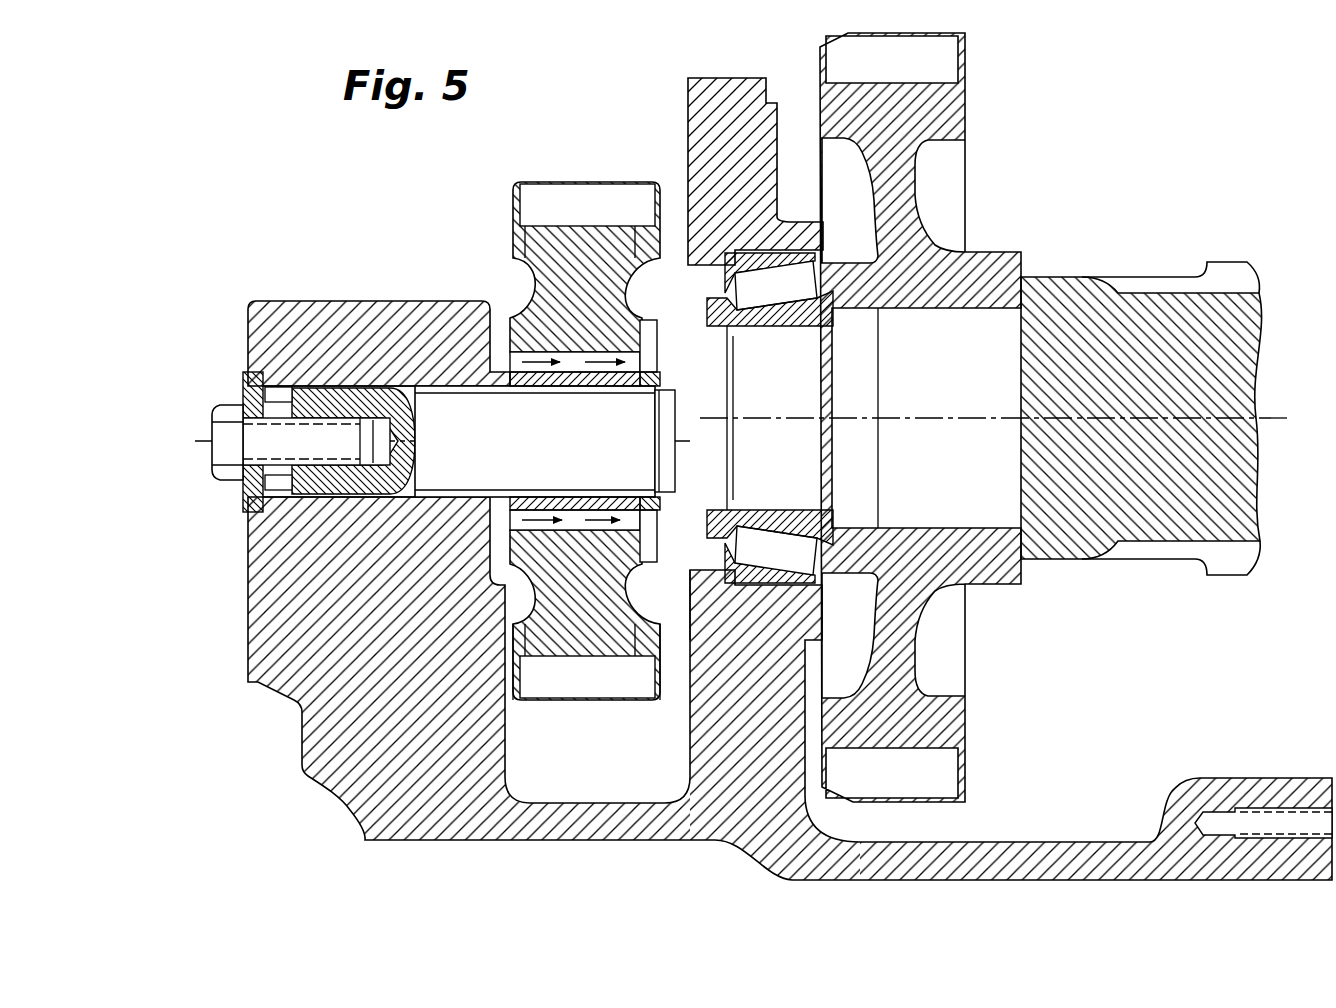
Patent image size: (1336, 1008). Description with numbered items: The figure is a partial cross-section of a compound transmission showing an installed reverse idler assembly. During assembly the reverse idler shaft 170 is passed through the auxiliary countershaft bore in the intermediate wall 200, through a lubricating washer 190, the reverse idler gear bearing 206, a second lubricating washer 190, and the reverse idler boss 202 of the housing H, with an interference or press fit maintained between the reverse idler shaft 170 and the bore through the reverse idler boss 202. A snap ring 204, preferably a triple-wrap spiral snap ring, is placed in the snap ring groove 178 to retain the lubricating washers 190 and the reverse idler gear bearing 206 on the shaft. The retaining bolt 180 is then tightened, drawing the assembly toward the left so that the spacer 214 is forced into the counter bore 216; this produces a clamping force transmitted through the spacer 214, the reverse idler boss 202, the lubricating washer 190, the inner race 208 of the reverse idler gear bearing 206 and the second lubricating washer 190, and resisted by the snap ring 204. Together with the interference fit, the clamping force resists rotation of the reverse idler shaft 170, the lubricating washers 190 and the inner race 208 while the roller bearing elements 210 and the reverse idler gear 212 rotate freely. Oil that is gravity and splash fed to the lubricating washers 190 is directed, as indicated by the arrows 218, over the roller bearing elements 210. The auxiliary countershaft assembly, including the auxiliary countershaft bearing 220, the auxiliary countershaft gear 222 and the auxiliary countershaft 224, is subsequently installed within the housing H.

The housing H is at (385, 840).
The reverse idler shaft 170 is at (228, 395).
The retaining bolt 180 is at (211, 456).
The spacer 214 is at (240, 505).
The counter bore 216 is at (243, 398).
The reverse idler boss 202 is at (309, 298).
The lubricating washer 190 is at (500, 330).
The arrows 218 is at (498, 348).
The snap ring groove 178 is at (657, 383).
The snap ring 204 is at (665, 505).
The reverse idler gear bearing 206 is at (637, 515).
The inner race 208 is at (535, 508).
The roller bearing elements 210 is at (548, 538).
The reverse idler gear 212 is at (660, 645).
The intermediate wall 200 is at (688, 143).
The auxiliary countershaft bearing 220 is at (745, 250).
The auxiliary countershaft gear 222 is at (963, 722).
The auxiliary countershaft 224 is at (1140, 560).